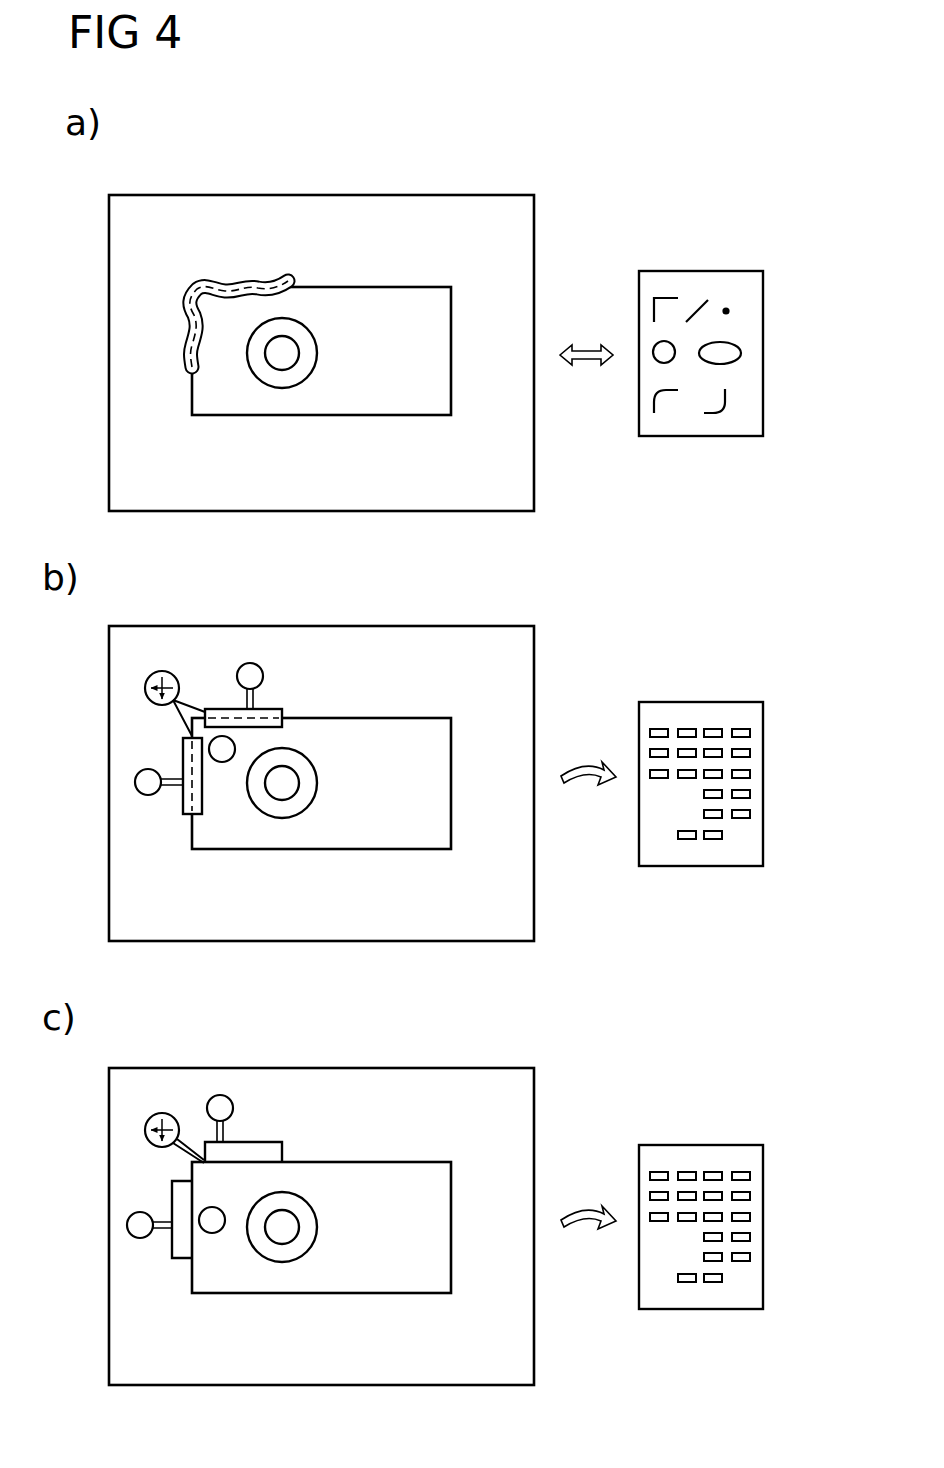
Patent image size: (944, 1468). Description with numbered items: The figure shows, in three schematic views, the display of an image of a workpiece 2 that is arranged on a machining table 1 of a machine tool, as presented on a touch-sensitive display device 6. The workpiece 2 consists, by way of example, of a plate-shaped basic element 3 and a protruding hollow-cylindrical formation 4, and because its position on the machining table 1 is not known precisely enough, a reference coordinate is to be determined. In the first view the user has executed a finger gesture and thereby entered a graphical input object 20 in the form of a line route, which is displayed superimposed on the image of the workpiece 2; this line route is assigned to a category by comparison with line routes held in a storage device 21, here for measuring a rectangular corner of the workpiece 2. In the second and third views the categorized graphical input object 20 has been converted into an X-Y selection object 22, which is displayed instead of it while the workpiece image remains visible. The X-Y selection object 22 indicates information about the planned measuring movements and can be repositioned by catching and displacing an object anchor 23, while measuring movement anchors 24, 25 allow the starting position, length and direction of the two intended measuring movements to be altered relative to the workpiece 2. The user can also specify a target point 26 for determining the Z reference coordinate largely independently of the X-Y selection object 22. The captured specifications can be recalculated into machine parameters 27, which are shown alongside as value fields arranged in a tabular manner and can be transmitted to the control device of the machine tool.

The machining table 1 is at (514, 207).
The workpiece 2 is at (430, 248).
The plate-shaped basic element 3 is at (372, 312).
The protruding hollow-cylindrical formation 4 is at (247, 352).
The touch-sensitive display device 6 is at (196, 184).
The graphical input object 20 is at (240, 290).
The storage device 21 is at (713, 266).
The X-Y selection object 22 is at (221, 698).
The object anchor 23 is at (145, 688).
The measuring movement anchor 24 is at (251, 662).
The measuring movement anchor 25 is at (135, 782).
The target point 26 is at (192, 736).
The machine parameters 27 is at (713, 716).